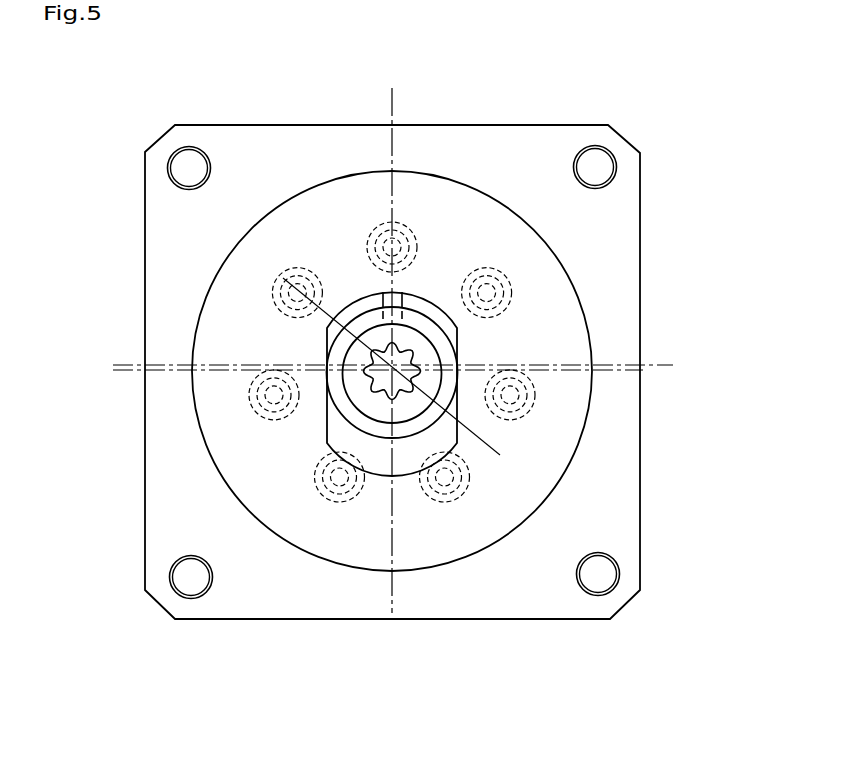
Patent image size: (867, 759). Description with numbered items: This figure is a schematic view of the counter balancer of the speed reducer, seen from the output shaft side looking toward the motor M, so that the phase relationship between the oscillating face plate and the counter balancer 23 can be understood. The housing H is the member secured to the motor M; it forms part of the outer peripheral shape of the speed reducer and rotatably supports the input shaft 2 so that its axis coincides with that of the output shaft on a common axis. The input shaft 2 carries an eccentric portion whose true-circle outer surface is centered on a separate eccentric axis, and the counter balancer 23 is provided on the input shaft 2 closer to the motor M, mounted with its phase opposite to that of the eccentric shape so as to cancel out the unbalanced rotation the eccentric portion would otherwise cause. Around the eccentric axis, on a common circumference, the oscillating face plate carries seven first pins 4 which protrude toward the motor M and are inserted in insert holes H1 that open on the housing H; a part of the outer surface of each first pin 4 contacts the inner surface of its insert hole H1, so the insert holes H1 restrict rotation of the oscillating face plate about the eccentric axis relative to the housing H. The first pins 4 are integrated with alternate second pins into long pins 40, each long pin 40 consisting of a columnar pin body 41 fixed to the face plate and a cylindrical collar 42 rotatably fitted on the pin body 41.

The motor M is at (540, 162).
The housing H is at (163, 317).
The input shaft 2 is at (328, 396).
The counter balancer 23 is at (400, 465).
The first pins 4 is at (626, 372).
The long pins 40 is at (510, 395).
The pin bodies 41 is at (510, 395).
The collars 42 is at (512, 372).
The insert holes H1 is at (520, 413).